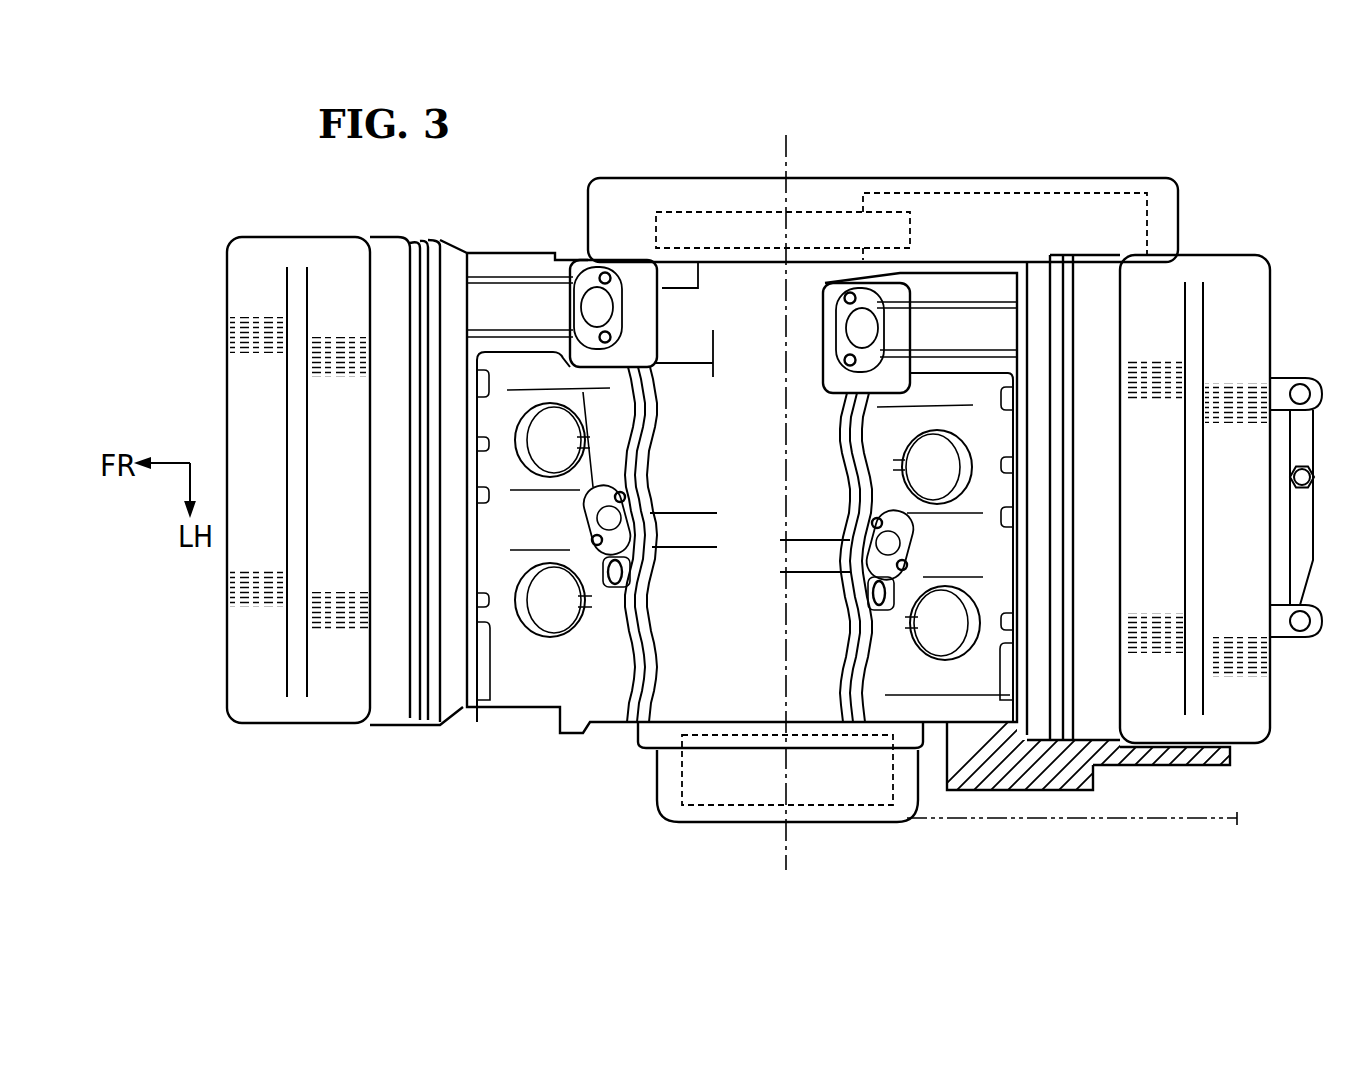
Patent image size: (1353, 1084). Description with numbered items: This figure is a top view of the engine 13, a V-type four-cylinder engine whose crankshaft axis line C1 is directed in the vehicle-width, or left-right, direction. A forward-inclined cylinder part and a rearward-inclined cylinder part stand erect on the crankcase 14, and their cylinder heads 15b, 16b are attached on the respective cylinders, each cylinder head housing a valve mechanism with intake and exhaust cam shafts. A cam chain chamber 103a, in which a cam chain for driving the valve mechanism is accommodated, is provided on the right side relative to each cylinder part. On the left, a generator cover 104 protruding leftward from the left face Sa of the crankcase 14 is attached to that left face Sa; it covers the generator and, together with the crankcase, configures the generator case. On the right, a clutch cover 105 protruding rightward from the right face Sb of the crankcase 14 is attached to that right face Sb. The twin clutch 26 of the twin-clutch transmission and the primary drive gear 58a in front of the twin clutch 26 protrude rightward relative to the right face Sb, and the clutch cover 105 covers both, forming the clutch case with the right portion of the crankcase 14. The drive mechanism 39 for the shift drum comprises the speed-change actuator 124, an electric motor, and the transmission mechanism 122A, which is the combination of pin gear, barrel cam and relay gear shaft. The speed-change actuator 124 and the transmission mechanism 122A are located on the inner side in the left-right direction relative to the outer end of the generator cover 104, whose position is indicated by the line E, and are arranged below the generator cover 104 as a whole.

The engine 13 is at (398, 832).
The clutch cover 105 is at (703, 188).
The primary drive gear 58a is at (818, 222).
The twin clutch 26 is at (1081, 185).
The right face Sb is at (680, 262).
The cam chain chamber 103a is at (960, 317).
The cylinder head 15b is at (498, 685).
The cylinder head 16b is at (913, 707).
The crankcase 14 is at (650, 728).
The generator cover 104 is at (717, 815).
The left face Sa is at (677, 722).
The crankshaft axis line C1 is at (790, 843).
The drive mechanism 39 is at (1134, 814).
The speed-change actuator 124 is at (1045, 793).
The transmission mechanism 122A is at (1166, 770).
The line indicating outer end of generator cover E is at (1237, 825).